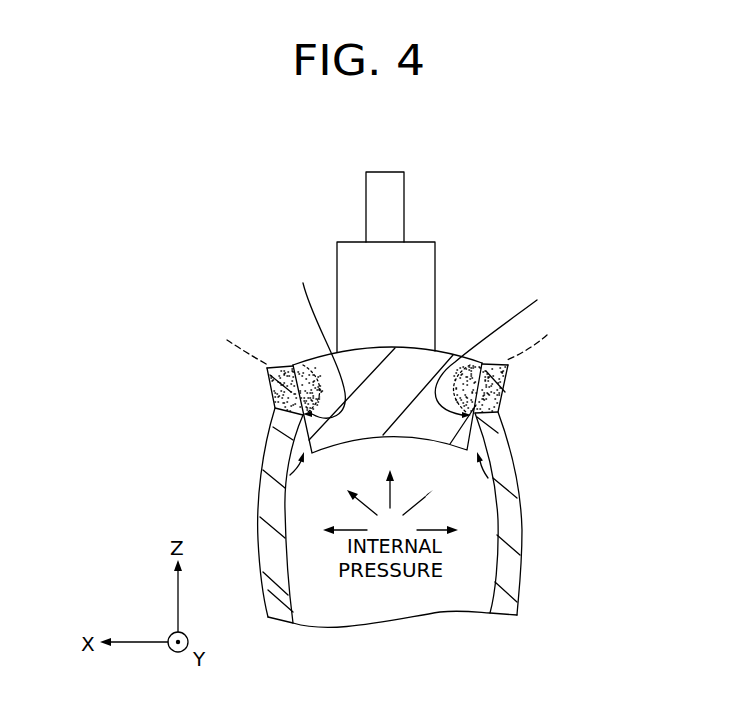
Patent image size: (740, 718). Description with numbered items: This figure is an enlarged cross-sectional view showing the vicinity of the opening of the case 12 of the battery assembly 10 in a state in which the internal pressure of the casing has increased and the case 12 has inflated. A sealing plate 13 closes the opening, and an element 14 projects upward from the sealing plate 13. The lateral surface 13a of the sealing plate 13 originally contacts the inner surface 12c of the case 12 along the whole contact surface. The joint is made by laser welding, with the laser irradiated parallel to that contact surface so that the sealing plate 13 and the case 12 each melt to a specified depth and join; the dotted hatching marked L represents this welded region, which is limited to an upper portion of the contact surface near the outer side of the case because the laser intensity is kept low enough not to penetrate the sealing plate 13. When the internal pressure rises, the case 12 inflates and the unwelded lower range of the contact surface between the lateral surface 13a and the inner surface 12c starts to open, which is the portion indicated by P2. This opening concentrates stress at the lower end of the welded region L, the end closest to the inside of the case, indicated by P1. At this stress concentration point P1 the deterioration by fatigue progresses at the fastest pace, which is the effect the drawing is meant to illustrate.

The airbag device 10 is at (238, 245).
The case 12 is at (508, 583).
The inner surface of the case 12c is at (490, 512).
The sealing plate 13 is at (408, 363).
The lateral surface of the sealing plate 13a is at (468, 447).
The inflator / stud 14 is at (404, 193).
The stress concentration point P1 is at (425, 337).
The opening portion of the contact surface P2 is at (283, 487).
The welded region L is at (382, 341).